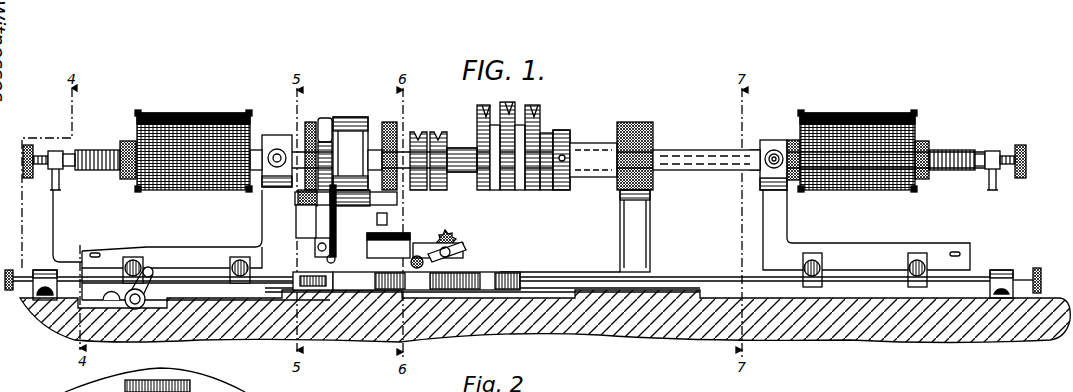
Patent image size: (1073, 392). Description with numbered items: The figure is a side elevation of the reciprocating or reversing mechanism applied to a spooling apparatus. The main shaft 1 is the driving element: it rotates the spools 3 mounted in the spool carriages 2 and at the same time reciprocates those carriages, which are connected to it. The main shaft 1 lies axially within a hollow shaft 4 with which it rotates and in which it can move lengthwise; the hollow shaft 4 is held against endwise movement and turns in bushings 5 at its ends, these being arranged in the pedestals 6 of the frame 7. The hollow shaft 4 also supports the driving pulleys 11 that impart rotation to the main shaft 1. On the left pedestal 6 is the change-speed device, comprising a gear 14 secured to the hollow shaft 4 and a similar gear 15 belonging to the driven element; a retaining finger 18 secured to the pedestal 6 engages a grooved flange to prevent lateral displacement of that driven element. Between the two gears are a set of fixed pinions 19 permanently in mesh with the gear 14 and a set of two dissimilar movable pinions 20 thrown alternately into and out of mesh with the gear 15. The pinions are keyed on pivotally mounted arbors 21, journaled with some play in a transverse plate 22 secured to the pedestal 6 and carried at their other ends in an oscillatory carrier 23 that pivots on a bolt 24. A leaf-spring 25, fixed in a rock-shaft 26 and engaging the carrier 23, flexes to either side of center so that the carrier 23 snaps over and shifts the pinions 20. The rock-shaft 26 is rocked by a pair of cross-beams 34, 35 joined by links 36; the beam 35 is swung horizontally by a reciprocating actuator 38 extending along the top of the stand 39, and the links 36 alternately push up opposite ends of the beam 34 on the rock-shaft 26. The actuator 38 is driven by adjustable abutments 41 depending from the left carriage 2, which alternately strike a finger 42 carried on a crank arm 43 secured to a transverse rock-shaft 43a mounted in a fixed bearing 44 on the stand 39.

The main shaft 1 is at (685, 152).
The spool carriage 2 is at (205, 238).
The spool 3 is at (183, 130).
The hollow shaft 4 is at (580, 146).
The bushing 5 is at (655, 148).
The pedestal 6 is at (635, 231).
The frame 7 is at (543, 276).
The driving pulley 11 is at (517, 110).
The gear 14 is at (398, 133).
The gear 15 is at (309, 148).
The retaining finger 18 is at (326, 122).
The fixed pinion 19 is at (398, 201).
The movable pinion 20 is at (296, 218).
The arbor 21 is at (337, 240).
The transverse plate 22 is at (372, 242).
The oscillatory carrier 23 is at (368, 235).
The bolt 24 is at (388, 219).
The leaf-spring 25 is at (320, 240).
The rock-shaft 26 is at (438, 240).
The cross-beam 34 is at (467, 257).
The cross-beam 35 is at (412, 261).
The link 36 is at (432, 272).
The actuator 38 is at (320, 290).
The stand 39 is at (272, 318).
The adjustable abutment 41 is at (132, 257).
The finger 42 is at (148, 267).
The crank arm 43 is at (146, 297).
The transverse rock-shaft 43a is at (135, 309).
The fixed bearing 44 is at (152, 303).